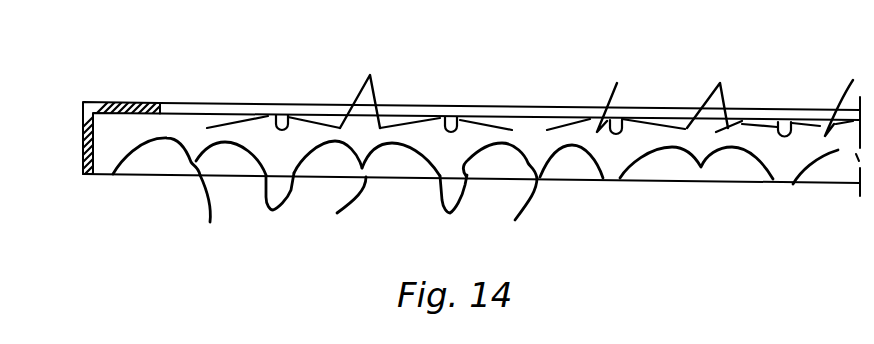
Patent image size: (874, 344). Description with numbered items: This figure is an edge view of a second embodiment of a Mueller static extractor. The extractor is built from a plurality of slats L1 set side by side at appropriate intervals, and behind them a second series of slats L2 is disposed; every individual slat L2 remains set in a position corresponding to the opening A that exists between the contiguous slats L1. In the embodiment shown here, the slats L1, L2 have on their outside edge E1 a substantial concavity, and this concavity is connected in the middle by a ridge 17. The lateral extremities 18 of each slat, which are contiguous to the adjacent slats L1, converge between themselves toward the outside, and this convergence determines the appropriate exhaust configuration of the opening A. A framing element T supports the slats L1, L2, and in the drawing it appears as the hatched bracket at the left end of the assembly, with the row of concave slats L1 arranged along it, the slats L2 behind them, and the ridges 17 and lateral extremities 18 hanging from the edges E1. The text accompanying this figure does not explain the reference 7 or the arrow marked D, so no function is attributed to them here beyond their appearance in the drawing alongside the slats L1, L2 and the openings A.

The opening A is at (475, 161).
The thread 7 is at (213, 208).
The ridge 17 is at (462, 113).
The lateral extremities 18 is at (366, 209).
The slats L1 is at (767, 173).
The second series of slats L2 is at (535, 91).
The outside edge E1 is at (145, 150).
The framing element T is at (81, 131).
The feed direction D is at (178, 97).